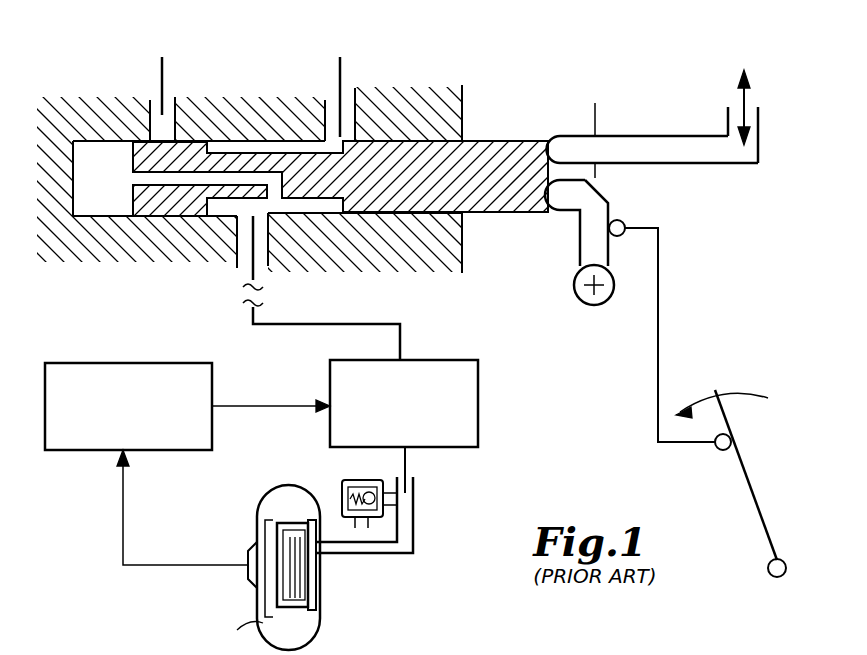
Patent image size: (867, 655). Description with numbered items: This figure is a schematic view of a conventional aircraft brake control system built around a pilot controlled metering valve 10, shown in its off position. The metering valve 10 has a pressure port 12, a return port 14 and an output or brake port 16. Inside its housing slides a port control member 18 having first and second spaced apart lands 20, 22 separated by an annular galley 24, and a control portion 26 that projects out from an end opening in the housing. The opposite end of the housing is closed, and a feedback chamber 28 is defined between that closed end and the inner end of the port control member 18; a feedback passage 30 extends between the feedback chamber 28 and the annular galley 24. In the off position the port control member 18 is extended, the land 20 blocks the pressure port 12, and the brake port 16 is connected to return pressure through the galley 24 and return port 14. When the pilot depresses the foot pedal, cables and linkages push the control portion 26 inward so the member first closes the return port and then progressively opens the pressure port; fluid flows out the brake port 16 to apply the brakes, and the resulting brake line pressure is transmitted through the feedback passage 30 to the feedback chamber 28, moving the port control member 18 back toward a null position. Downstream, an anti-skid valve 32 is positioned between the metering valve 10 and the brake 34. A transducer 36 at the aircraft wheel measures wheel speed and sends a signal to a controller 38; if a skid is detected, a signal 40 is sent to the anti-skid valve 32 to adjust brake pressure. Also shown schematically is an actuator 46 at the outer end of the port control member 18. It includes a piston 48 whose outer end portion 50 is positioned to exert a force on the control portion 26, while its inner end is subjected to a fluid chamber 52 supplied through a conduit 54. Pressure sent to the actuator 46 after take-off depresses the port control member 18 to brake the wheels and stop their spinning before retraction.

The metering valve 10 is at (472, 98).
The pressure port 12 is at (150, 100).
The return port 14 is at (352, 100).
The brake port 16 is at (262, 257).
The port control member 18 is at (487, 188).
The first land 20 is at (175, 218).
The second land 22 is at (382, 215).
The annular galley 24 is at (250, 147).
The control portion 26 is at (507, 137).
The feedback chamber 28 is at (75, 155).
The feedback passage 30 is at (198, 182).
The anti-skid valve 32 is at (480, 423).
The brake 34 is at (315, 577).
The transducer 36 is at (247, 555).
The controller 38 is at (155, 452).
The signal 40 is at (262, 405).
The actuator 46 is at (630, 108).
The piston 48 is at (662, 135).
The outer end portion 50 is at (563, 147).
The fluid chamber 52 is at (735, 100).
The conduit 54 is at (752, 98).